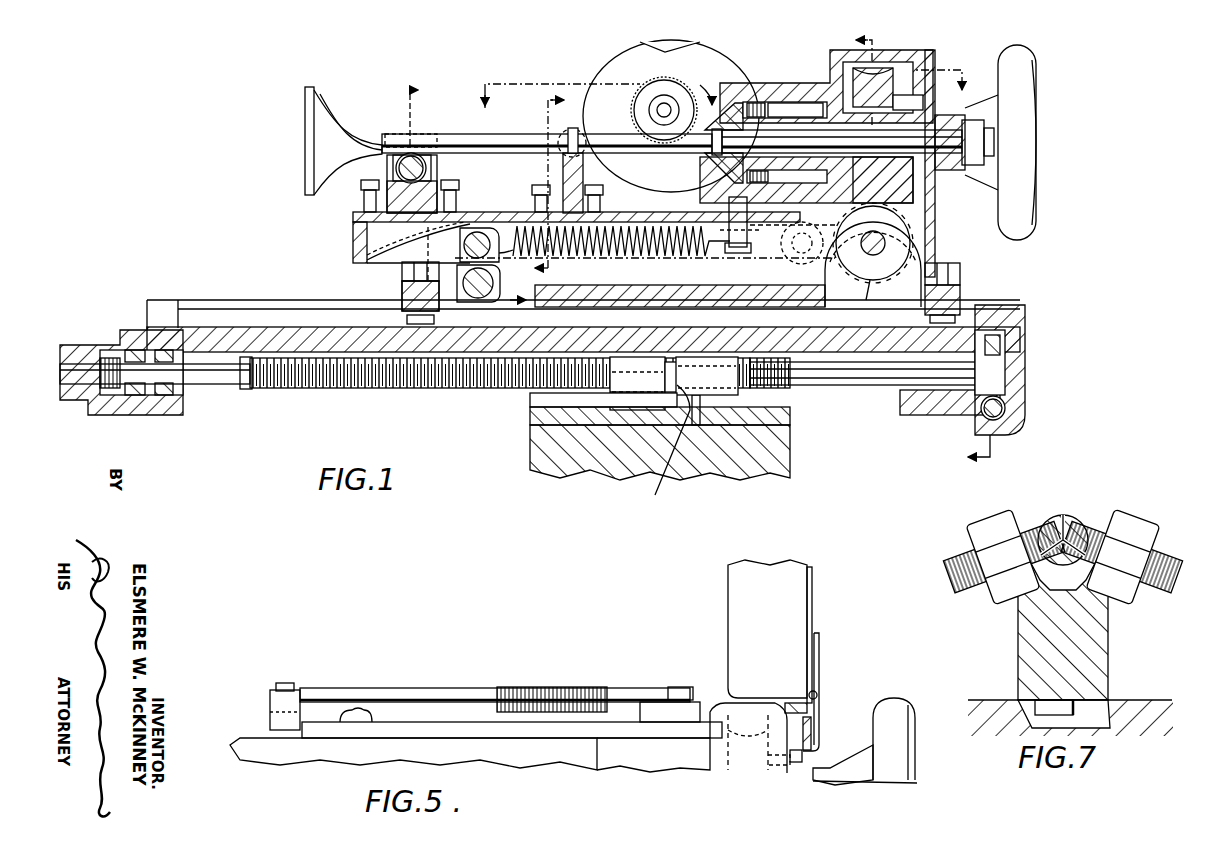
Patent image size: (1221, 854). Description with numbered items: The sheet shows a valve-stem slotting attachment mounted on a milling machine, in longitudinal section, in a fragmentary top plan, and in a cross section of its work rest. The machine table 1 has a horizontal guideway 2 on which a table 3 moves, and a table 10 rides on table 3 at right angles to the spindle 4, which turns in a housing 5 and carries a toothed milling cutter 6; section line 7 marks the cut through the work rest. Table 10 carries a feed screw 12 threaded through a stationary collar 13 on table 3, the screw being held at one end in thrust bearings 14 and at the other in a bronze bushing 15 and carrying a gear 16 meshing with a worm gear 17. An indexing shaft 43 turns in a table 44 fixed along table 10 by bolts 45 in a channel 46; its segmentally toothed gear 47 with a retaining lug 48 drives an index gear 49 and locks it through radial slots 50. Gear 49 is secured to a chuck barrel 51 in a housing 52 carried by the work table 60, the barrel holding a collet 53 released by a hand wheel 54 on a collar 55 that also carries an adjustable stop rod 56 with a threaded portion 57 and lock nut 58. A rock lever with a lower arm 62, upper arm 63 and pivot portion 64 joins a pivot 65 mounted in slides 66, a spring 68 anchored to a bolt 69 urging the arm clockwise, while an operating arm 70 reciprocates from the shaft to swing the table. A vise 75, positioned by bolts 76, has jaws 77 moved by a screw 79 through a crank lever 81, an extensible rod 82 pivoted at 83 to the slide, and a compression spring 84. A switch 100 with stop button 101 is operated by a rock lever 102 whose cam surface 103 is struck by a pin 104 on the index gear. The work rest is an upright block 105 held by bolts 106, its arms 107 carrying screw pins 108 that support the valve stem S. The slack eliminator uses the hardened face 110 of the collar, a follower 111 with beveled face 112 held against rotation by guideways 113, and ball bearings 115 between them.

In FIG. 1, the table 1 is at (790, 470).
In FIG. 1, the horizontal guideway 2 is at (730, 428).
In FIG. 1, the table 3 is at (530, 428).
In FIG. 1, the spindle 4 is at (630, 112).
In FIG. 1, the housing 5 is at (598, 60).
In FIG. 1, the toothed milling cutter 6 is at (660, 82).
In FIG. 1, the section line 7 is at (540, 183).
In FIG. 1, the table 10 is at (850, 385).
In FIG. 1, the feed screw 12 is at (362, 390).
In FIG. 1, the internally threaded collar 13 is at (707, 376).
In FIG. 1, the antifriction axial thrust bearings 14 is at (132, 343).
In FIG. 1, the bronze bushing 15 is at (925, 395).
In FIG. 1, the gear 16 is at (1000, 350).
In FIG. 1, the worm gear 17 is at (1007, 410).
In FIG. 1, the indexing shaft 43 is at (880, 255).
In FIG. 1, the table 44 is at (676, 285).
In FIG. 1, the bolts 45 is at (402, 272).
In FIG. 1, the channel 46 is at (295, 318).
In FIG. 1, the segmentally toothed gear 47 is at (866, 294).
In FIG. 1, the index retaining lug 48 is at (885, 212).
In FIG. 1, the index gear 49 is at (885, 80).
In FIG. 5, the index gear 49 is at (742, 727).
In FIG. 1, the radial slots 50 is at (880, 198).
In FIG. 1, the chuck barrel 51 is at (918, 92).
In FIG. 1, the housing 52 is at (798, 88).
In FIG. 5, the housing 52 is at (650, 760).
In FIG. 1, the gripping collet 53 is at (705, 163).
In FIG. 1, the hand wheel 54 is at (1034, 62).
In FIG. 5, the hand wheel 54 is at (896, 700).
In FIG. 1, the collar 55 is at (955, 172).
In FIG. 1, the adjustable stop rod 56 is at (805, 130).
In FIG. 1, the threaded portion 57 is at (978, 125).
In FIG. 1, the lock nut 58 is at (990, 148).
In FIG. 1, the work table 60 is at (353, 239).
In FIG. 5, the work table 60 is at (272, 752).
In FIG. 7, the work table 60 is at (986, 704).
In FIG. 1, the lower arm 62 is at (429, 296).
In FIG. 1, the upper arm 63 is at (464, 242).
In FIG. 1, the pivot portion 64 is at (466, 272).
In FIG. 1, the pivot 65 is at (492, 228).
In FIG. 1, the longitudinal slides 66 is at (428, 252).
In FIG. 1, the spring 68 is at (625, 226).
In FIG. 1, the stationary anchor bolt 69 is at (741, 255).
In FIG. 1, the operating arm 70 is at (618, 285).
In FIG. 1, the vise 75 is at (393, 168).
In FIG. 1, the bolts 76 is at (361, 188).
In FIG. 1, the jaws 77 is at (420, 134).
In FIG. 1, the screw 79 is at (426, 170).
In FIG. 1, the crank lever 81 is at (356, 214).
In FIG. 5, the crank lever 81 is at (270, 713).
In FIG. 5, the extensible rod 82 is at (418, 690).
In FIG. 5, the pivot 83 is at (685, 686).
In FIG. 5, the compression spring 84 is at (582, 688).
In FIG. 5, the push button type switch 100 is at (735, 585).
In FIG. 5, the stop button 101 is at (813, 628).
In FIG. 5, the rock lever 102 is at (820, 665).
In FIG. 5, the cam surface 103 is at (785, 747).
In FIG. 1, the pin 104 is at (923, 104).
In FIG. 5, the pin 104 is at (820, 765).
In FIG. 1, the upright block 105 is at (556, 172).
In FIG. 7, the upright block 105 is at (1018, 651).
In FIG. 1, the bolts 106 is at (540, 183).
In FIG. 7, the bolts 106 is at (1064, 710).
In FIG. 1, the spaced arms 107 is at (560, 133).
In FIG. 7, the spaced arms 107 is at (1012, 525).
In FIG. 1, the supporting screw pins 108 is at (582, 135).
In FIG. 7, the supporting screw pins 108 is at (957, 578).
In FIG. 1, the face 110 is at (655, 450).
In FIG. 1, the follower 111 is at (637, 399).
In FIG. 1, the beveled hardened face 112 is at (660, 376).
In FIG. 1, the guideways 113 is at (530, 404).
In FIG. 1, the hardened ball bearings 115 is at (684, 375).
In FIG. 1, the stem S is at (505, 133).
In FIG. 7, the stem S is at (1074, 517).